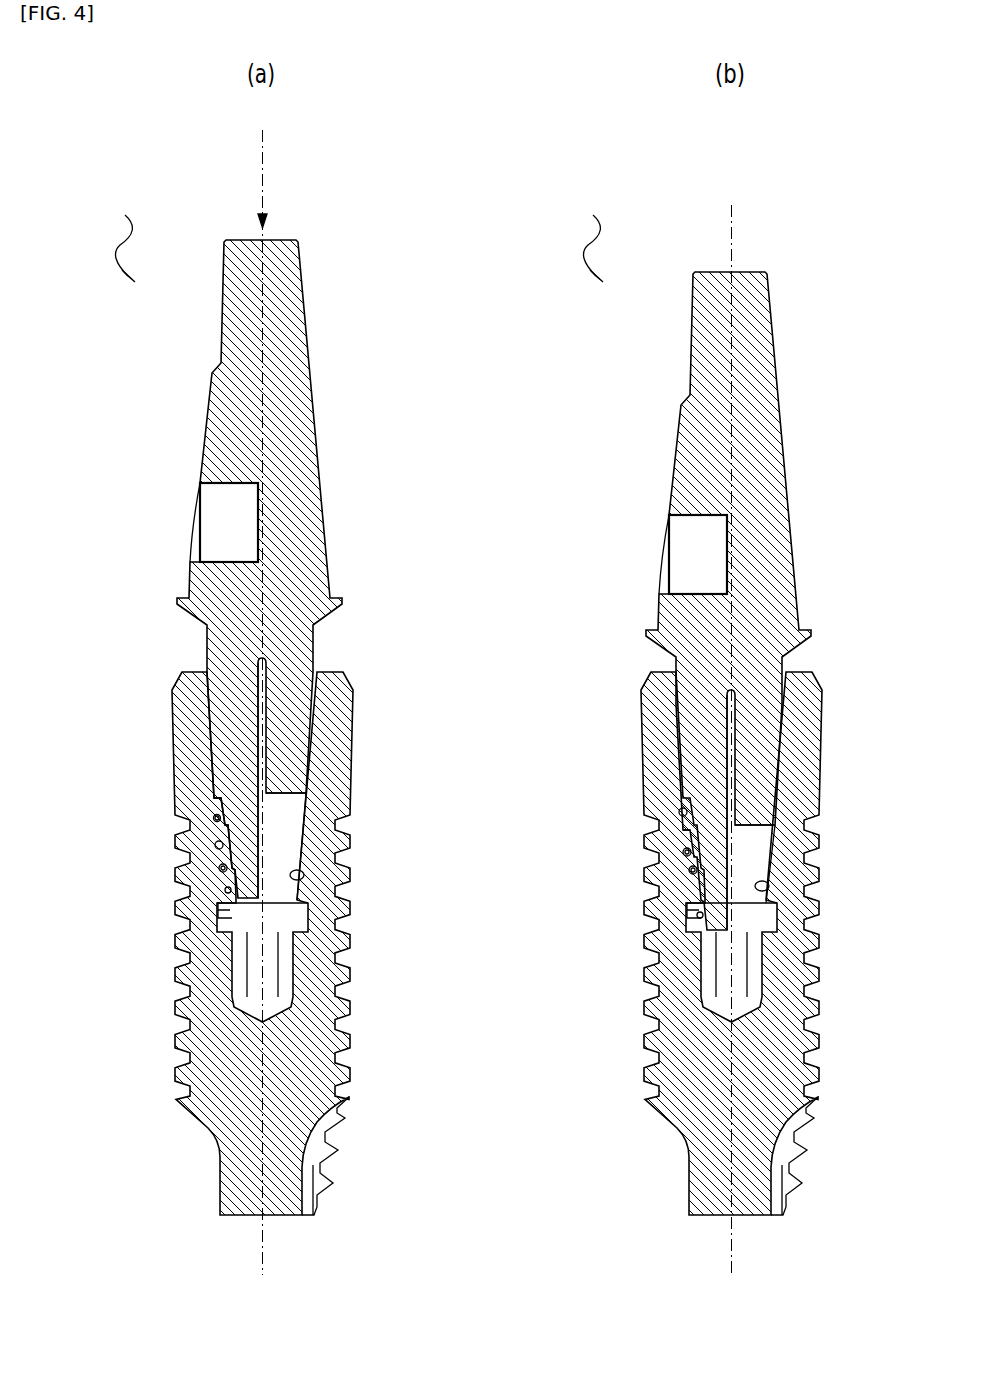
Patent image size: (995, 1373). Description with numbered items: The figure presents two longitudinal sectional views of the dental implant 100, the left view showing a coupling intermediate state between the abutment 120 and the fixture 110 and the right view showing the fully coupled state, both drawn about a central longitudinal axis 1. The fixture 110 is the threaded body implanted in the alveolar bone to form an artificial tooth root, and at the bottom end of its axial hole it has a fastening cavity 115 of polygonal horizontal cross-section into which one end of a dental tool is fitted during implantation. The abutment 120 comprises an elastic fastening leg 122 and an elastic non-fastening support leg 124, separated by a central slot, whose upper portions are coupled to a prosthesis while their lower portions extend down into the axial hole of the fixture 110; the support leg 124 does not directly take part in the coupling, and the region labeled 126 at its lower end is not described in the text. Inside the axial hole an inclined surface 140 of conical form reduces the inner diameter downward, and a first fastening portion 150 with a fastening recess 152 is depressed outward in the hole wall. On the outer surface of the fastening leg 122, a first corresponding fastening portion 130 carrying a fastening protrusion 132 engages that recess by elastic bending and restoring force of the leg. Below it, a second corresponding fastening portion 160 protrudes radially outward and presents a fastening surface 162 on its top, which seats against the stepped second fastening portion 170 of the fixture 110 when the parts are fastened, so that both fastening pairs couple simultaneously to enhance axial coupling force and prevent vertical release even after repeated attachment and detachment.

The central axis 1 is at (262, 1252).
The dental implant 100 is at (143, 213).
The fixture 110 is at (330, 950).
The fastening cavity 115 is at (274, 956).
The abutment 120 is at (210, 445).
The elastic fastening leg 122 is at (218, 727).
The elastic non-fastening support leg 124 is at (305, 722).
The abutment inner hollow 126 is at (312, 784).
The first corresponding fastening portion 130 is at (213, 813).
The fastening protrusion 132 is at (452, 835).
The inclined surface 140 is at (216, 845).
The first fastening portion 150 is at (220, 868).
The fastening recess 152 is at (458, 869).
The second corresponding fastening portion 160 is at (232, 886).
The fastening surface 162 is at (227, 868).
The second fastening portion 170 is at (226, 905).